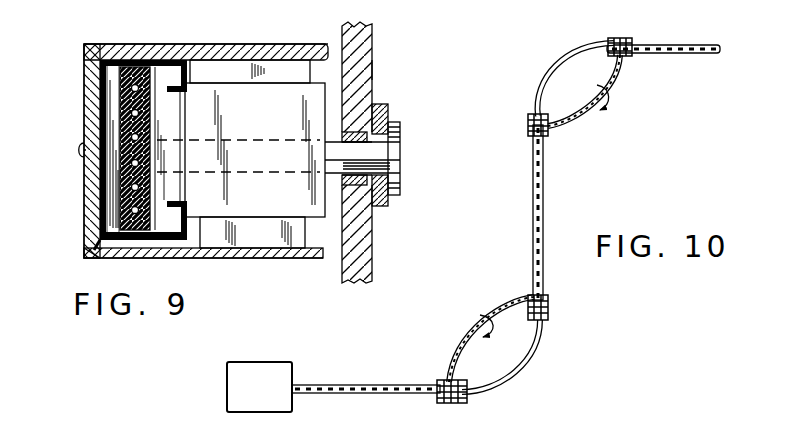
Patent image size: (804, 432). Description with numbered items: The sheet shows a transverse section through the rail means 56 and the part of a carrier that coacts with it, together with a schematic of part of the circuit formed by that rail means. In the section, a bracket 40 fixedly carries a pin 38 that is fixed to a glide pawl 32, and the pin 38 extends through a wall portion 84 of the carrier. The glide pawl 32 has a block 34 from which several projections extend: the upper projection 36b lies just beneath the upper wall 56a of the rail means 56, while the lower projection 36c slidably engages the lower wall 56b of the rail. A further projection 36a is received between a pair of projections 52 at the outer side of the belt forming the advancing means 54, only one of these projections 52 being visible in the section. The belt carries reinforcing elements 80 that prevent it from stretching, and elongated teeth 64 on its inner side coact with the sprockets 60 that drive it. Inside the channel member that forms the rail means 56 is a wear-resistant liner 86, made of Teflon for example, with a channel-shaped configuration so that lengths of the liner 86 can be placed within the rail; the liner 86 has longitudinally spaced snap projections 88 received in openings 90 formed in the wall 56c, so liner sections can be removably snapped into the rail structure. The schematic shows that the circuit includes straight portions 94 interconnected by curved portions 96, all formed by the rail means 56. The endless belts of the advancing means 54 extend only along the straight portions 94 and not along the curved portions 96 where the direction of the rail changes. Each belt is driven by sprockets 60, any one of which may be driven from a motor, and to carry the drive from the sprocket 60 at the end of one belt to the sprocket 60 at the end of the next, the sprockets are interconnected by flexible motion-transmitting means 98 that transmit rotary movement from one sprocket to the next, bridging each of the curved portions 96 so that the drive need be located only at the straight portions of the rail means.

In FIG. 9, the glide pawl 32 is at (332, 223).
In FIG. 9, the block 34 is at (270, 129).
In FIG. 9, the projection 36a is at (177, 173).
In FIG. 9, the upper projection 36b is at (247, 70).
In FIG. 9, the lower projection 36c is at (252, 248).
In FIG. 9, the pin 38 is at (396, 190).
In FIG. 9, the bracket 40 is at (383, 208).
In FIG. 9, the projections 52 is at (160, 82).
In FIG. 9, the advancing means 54 is at (113, 203).
In FIG. 10, the advancing means 54 is at (391, 404).
In FIG. 9, the rail means 56 is at (80, 109).
In FIG. 9, the upper wall 56a is at (203, 56).
In FIG. 9, the lower wall 56b is at (312, 260).
In FIG. 9, the wall 56c is at (88, 238).
In FIG. 10, the sprockets 60 is at (630, 43).
In FIG. 9, the elongated teeth 64 is at (117, 90).
In FIG. 9, the reinforcing elements 80 is at (120, 58).
In FIG. 9, the wall portion 84 is at (360, 71).
In FIG. 9, the wear-resistant liner 86 is at (93, 258).
In FIG. 9, the snap projections 88 is at (80, 153).
In FIG. 9, the openings 90 is at (80, 141).
In FIG. 10, the straight portions 94 is at (692, 55).
In FIG. 10, the curved portions 96 is at (553, 72).
In FIG. 10, the flexible motion-transmitting means 98 is at (576, 118).